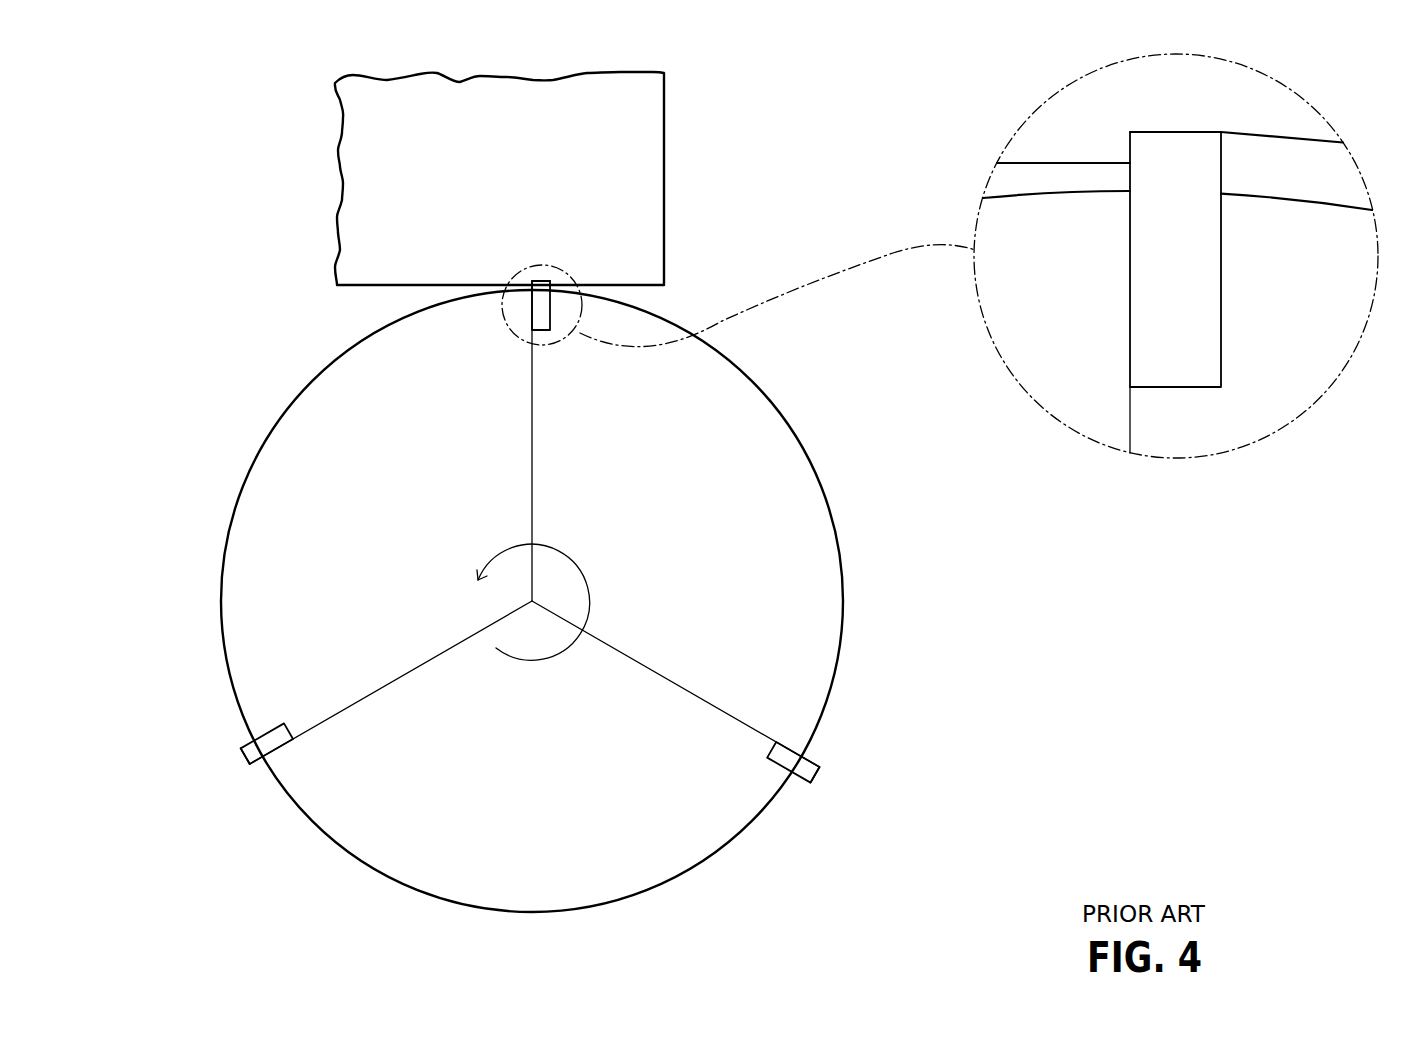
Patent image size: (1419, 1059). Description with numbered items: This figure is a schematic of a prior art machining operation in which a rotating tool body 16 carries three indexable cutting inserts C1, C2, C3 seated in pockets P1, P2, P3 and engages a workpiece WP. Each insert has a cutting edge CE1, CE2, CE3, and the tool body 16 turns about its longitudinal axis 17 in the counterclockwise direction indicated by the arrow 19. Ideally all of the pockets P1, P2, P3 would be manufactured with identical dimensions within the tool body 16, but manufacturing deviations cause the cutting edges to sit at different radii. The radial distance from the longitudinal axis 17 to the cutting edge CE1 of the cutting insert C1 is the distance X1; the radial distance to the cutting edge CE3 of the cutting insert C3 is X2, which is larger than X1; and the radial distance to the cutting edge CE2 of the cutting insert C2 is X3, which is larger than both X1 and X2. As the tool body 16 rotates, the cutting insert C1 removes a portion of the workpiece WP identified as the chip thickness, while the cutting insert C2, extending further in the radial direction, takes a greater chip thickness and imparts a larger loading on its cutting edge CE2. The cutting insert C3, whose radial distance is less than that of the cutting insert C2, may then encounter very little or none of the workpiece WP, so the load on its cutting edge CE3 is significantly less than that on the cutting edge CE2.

The workpiece WP is at (839, 178).
The tool body 16 is at (802, 577).
The longitudinal axis 17 is at (535, 524).
The arrow 19 is at (583, 567).
The radial distance X1 is at (532, 493).
The radial distance X2 is at (420, 668).
The radial distance X3 is at (652, 668).
The cutting insert C1 is at (532, 326).
The cutting insert C2 is at (807, 754).
The cutting insert C3 is at (262, 762).
The cutting edge CE1 is at (533, 283).
The cutting edge CE2 is at (822, 765).
The cutting edge CE3 is at (254, 763).
The pocket P1 is at (497, 322).
The pocket P2 is at (798, 740).
The pocket P3 is at (278, 760).